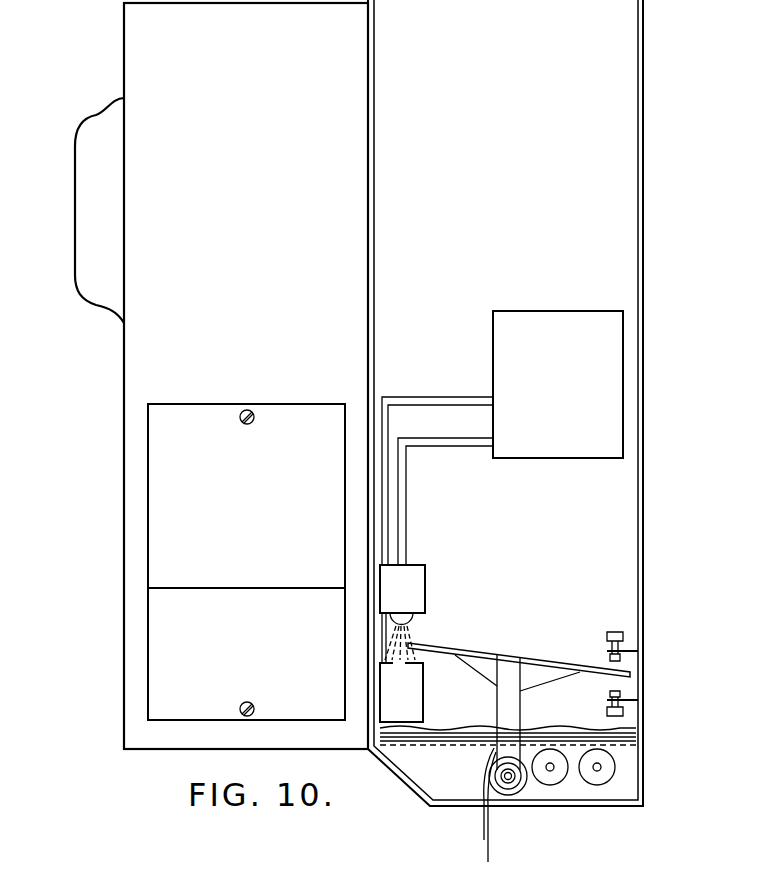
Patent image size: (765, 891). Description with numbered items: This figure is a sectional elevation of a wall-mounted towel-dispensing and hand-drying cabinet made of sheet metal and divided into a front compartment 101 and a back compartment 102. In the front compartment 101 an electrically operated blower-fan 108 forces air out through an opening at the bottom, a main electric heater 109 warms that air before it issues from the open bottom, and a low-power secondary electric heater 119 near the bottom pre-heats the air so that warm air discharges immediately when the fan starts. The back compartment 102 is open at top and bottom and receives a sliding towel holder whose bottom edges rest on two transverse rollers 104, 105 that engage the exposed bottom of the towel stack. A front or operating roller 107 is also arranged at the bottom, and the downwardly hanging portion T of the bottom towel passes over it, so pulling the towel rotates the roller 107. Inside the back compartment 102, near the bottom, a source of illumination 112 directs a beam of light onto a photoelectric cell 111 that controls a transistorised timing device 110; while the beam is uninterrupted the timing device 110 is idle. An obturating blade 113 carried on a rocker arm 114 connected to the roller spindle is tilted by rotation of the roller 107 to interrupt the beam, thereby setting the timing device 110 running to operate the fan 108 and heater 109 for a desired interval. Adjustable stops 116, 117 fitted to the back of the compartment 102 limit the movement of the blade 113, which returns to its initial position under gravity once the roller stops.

The front compartment 101 is at (178, 52).
The back compartment 102 is at (596, 67).
The roller 104 is at (553, 785).
The roller 105 is at (601, 785).
The front roller 107 is at (512, 795).
The blower-fan 108 is at (100, 220).
The main electric heater 109 is at (175, 515).
The transistorised timing device 110 is at (596, 370).
The photoelectric cell 111 is at (427, 702).
The source of illumination 112 is at (426, 591).
The obturating blade 113 is at (442, 642).
The rocker arm 114 is at (512, 700).
The adjustable stop 116 is at (630, 648).
The adjustable stop 117 is at (630, 708).
The secondary electric heater 119 is at (185, 663).
The hanging portion of the bottom towel T is at (483, 846).